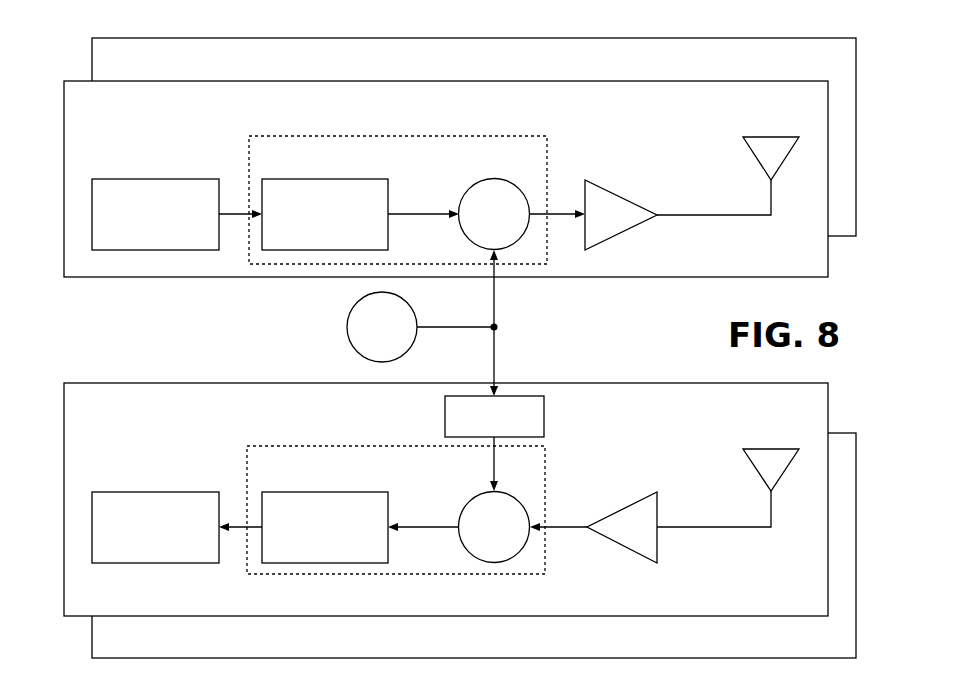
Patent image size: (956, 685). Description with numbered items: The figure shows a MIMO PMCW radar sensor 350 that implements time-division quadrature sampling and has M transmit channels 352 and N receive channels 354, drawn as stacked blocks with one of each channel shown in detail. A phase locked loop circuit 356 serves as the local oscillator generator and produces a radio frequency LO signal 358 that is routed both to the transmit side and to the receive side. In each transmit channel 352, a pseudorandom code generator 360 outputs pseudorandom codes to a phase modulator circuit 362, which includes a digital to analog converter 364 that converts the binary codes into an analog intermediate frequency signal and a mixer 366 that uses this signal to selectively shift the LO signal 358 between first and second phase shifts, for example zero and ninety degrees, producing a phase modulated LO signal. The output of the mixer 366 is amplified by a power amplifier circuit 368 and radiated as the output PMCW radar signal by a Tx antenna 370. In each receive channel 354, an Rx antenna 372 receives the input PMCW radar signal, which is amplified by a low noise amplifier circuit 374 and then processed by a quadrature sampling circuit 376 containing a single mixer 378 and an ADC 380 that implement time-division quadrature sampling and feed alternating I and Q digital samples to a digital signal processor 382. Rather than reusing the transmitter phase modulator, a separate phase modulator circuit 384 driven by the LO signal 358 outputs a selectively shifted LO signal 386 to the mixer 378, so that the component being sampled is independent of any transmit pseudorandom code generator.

The MIMO PMCW radar sensor 350 is at (60, 63).
The transmit (Tx) channel 352 is at (187, 81).
The receive (Rx) channel 354 is at (178, 390).
The phase locked loop (PLL) circuit 356 is at (348, 318).
The LO signal 358 is at (494, 312).
The pseudorandom code generator 360 is at (148, 179).
The phase modulator circuit 362 is at (304, 136).
The digital to analog converter (DAC) 364 is at (337, 179).
The mixer 366 is at (500, 180).
The power amplifier (PA) circuit 368 is at (615, 193).
The Tx antenna 370 is at (765, 137).
The Rx antenna 372 is at (765, 449).
The low noise amplifier (LNA) circuit 374 is at (626, 505).
The quadrature sampling circuit 376 is at (335, 446).
The mixer 378 is at (474, 500).
The ADC 380 is at (335, 492).
The digital signal processor (DSP) 382 is at (145, 492).
The phase modulator circuit 384 is at (445, 407).
The selectively shifted LO signal 386 is at (495, 482).